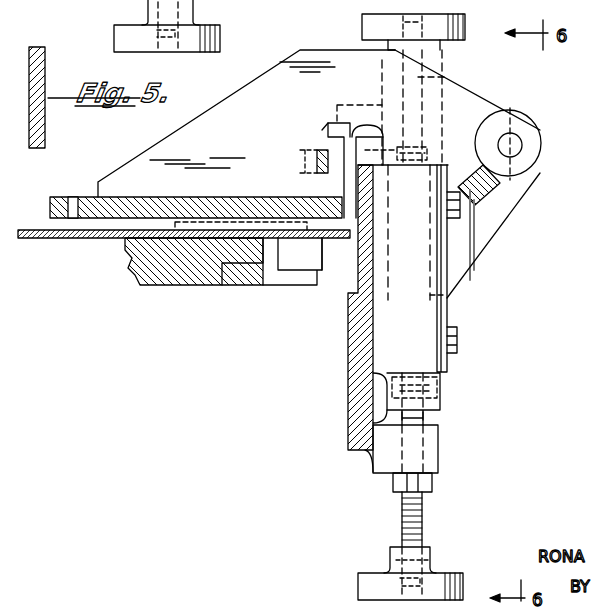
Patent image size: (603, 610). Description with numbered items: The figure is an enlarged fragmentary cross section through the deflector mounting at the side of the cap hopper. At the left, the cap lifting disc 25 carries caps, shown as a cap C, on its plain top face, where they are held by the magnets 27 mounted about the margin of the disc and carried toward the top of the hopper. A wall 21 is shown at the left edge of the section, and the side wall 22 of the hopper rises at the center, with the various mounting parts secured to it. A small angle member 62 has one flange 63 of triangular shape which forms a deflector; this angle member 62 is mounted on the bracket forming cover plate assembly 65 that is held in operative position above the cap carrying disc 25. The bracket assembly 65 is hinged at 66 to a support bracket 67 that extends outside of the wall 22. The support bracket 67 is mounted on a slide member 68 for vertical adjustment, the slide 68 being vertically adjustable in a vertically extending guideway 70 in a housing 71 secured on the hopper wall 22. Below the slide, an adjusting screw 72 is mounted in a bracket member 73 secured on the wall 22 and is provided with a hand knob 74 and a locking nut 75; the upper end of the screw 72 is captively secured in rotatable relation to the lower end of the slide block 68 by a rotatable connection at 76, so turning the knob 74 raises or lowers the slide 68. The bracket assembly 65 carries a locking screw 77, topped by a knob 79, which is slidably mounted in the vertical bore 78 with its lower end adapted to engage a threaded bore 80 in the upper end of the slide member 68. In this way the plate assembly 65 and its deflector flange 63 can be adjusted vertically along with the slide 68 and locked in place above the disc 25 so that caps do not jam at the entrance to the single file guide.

The side wall plate 21 is at (45, 120).
The side wall 22 is at (357, 358).
The cap lifting disc 25 is at (88, 238).
The magnets 27 is at (312, 263).
The angle member 62 is at (344, 193).
The triangular flange 63 is at (318, 228).
The bracket forming cover plate assembly 65 is at (283, 56).
The hinge 66 is at (521, 135).
The support bracket 67 is at (487, 220).
The slide member 68 is at (450, 300).
The guideway 70 is at (448, 318).
The housing 71 is at (452, 350).
The adjusting screw 72 is at (416, 512).
The bracket member 73 is at (440, 443).
The hand knob 74 is at (204, 10).
The locking nut 75 is at (433, 486).
The rotatable connection 76 is at (440, 390).
The locking screw 77 is at (441, 73).
The vertical bore 78 is at (420, 110).
The knurled knob 79 is at (465, 25).
The threaded bore 80 is at (409, 232).
The cap C is at (200, 232).